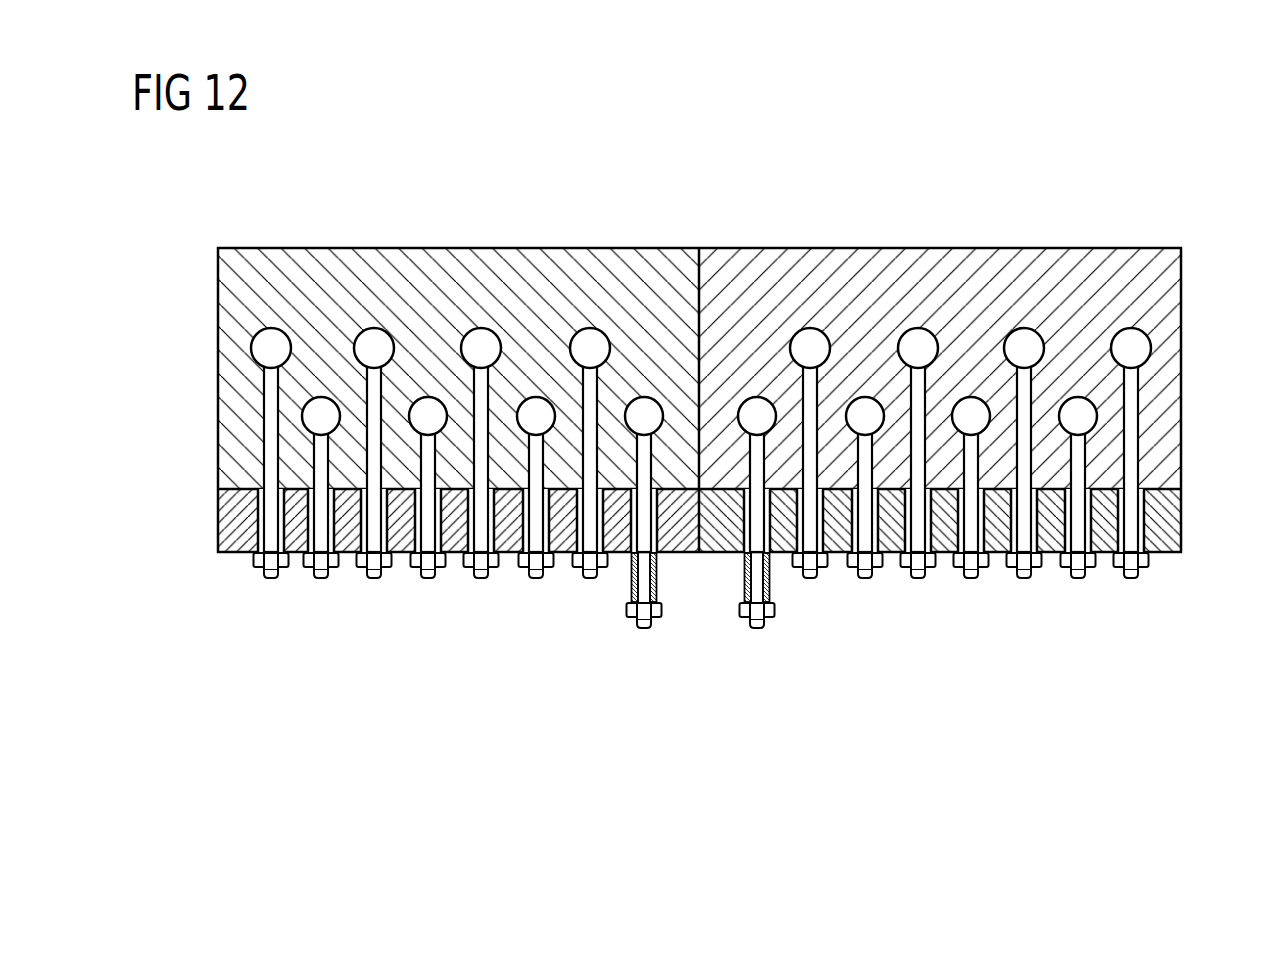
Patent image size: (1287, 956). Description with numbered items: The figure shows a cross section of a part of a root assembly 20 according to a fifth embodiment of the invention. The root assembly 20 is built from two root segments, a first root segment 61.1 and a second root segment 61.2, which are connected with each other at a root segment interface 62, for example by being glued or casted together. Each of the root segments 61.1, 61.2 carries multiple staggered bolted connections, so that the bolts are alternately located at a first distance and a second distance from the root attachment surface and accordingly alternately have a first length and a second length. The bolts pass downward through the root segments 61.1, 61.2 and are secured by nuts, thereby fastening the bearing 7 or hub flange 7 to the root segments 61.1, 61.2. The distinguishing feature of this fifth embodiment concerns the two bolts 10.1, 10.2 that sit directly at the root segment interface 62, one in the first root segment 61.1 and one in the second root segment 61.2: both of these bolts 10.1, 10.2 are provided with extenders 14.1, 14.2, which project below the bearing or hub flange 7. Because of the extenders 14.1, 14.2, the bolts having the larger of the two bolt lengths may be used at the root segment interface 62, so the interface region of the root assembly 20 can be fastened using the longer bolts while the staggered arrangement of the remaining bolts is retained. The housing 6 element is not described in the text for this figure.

The root assembly 20 is at (1172, 198).
The insulating housing 6 is at (701, 329).
The first root segment 61.1 is at (228, 307).
The second root segment 61.2 is at (1168, 292).
The root segment interface 62 is at (699, 275).
The bearing or hub flange 7 is at (1168, 519).
The bolt 10.1 is at (643, 521).
The bolt 10.2 is at (757, 527).
The extender 14.1 is at (631, 588).
The extender 14.2 is at (745, 583).